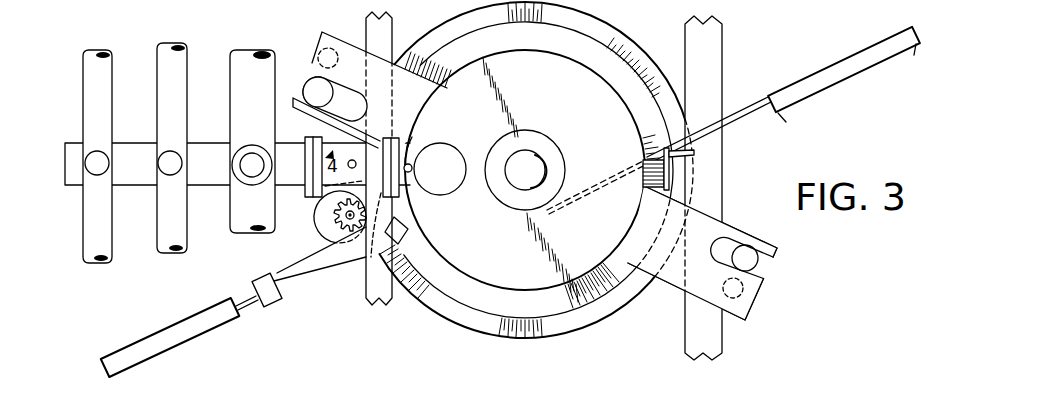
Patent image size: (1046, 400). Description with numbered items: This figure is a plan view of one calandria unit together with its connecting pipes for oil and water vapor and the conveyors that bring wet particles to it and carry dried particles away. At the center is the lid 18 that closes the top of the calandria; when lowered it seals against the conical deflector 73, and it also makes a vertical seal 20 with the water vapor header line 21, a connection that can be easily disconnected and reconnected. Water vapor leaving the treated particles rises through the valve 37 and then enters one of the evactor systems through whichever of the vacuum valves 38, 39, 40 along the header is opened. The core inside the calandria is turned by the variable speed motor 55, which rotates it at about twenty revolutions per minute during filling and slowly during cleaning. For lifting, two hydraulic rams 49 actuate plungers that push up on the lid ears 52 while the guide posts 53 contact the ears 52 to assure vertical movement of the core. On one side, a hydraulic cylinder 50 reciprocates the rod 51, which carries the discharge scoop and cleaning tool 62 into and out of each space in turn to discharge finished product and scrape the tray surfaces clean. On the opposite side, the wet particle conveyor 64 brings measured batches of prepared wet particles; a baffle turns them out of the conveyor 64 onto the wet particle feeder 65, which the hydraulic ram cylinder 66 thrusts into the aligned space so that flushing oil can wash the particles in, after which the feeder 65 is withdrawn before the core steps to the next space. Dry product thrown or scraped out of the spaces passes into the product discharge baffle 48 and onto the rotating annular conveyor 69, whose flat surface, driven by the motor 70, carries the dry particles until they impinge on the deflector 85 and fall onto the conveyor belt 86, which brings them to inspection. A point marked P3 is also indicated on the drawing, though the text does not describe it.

The lid 18 is at (537, 265).
The vertical seal 20 is at (412, 137).
The water vapor header line 21 is at (65, 155).
The valve 37 is at (462, 157).
The vacuum valve 38 is at (107, 170).
The vacuum valve 39 is at (182, 170).
The vacuum valve 40 is at (270, 170).
The product discharge baffle 48 is at (631, 45).
The hydraulic ram 49 is at (323, 48).
The hydraulic cylinder 50 is at (858, 50).
The rod 51 is at (742, 110).
The lid ear 52 is at (362, 77).
The guide post 53 is at (306, 86).
The motor 55 is at (553, 143).
The cleaning tool 62 is at (643, 148).
The wet particle conveyor 64 is at (367, 287).
The wet particle feeder 65 is at (291, 298).
The hydraulic ram cylinder 66 is at (177, 317).
The annular conveyor 69 is at (508, 20).
The motor 70 is at (322, 232).
The conical deflector 73 is at (538, 170).
The deflector 85 is at (695, 178).
The conveyor belt 86 is at (710, 60).
The pivot point P3 is at (412, 192).